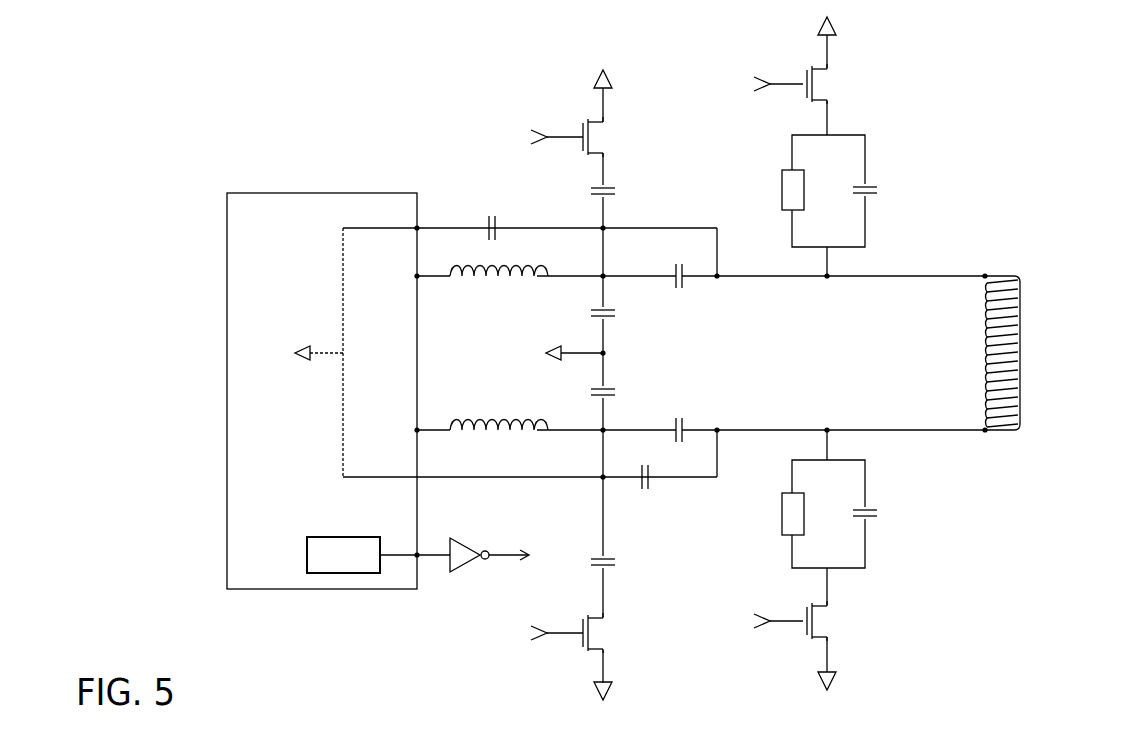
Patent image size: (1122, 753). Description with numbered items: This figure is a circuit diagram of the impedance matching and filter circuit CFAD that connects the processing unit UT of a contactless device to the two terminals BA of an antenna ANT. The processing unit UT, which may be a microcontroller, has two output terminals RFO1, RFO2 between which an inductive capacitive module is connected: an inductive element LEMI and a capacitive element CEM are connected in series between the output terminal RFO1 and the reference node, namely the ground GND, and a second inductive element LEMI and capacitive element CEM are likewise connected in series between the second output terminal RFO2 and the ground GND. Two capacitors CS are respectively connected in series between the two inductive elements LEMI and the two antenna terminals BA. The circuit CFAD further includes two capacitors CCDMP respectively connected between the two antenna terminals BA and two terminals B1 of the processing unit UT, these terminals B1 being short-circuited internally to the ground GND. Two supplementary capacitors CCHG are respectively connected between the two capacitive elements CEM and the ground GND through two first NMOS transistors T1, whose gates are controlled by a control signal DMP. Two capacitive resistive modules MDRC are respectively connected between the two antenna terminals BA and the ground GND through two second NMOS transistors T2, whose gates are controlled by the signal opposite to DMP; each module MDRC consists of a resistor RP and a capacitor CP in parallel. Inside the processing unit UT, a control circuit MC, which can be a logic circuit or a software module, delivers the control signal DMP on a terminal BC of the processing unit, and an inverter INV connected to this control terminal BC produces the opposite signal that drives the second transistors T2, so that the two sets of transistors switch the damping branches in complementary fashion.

The processing unit UT is at (339, 195).
The terminal B1 is at (531, 353).
The output terminal RFO1 is at (672, 276).
The second output terminal RFO2 is at (672, 430).
The inductive element LEMI is at (494, 294).
The EMI filter capacitor CEM is at (617, 313).
The capacitor CS is at (683, 288).
The capacitor CCDMP is at (492, 216).
The supplementary capacitor CCHG is at (592, 192).
The first NMOS transistor T1 is at (604, 139).
The second NMOS transistor T2 is at (829, 86).
The control signal DMP is at (748, 613).
The ground GND is at (544, 362).
The impedance matching and filter circuit CFAD is at (952, 170).
The capacitive resistive module MDRC is at (873, 209).
The resistor RP is at (780, 190).
The capacitor CP is at (878, 190).
The antenna terminal BA is at (1000, 272).
The antenna ANT is at (1022, 318).
The control circuit MC is at (378, 555).
The terminal BC is at (414, 551).
The inverter INV is at (468, 540).